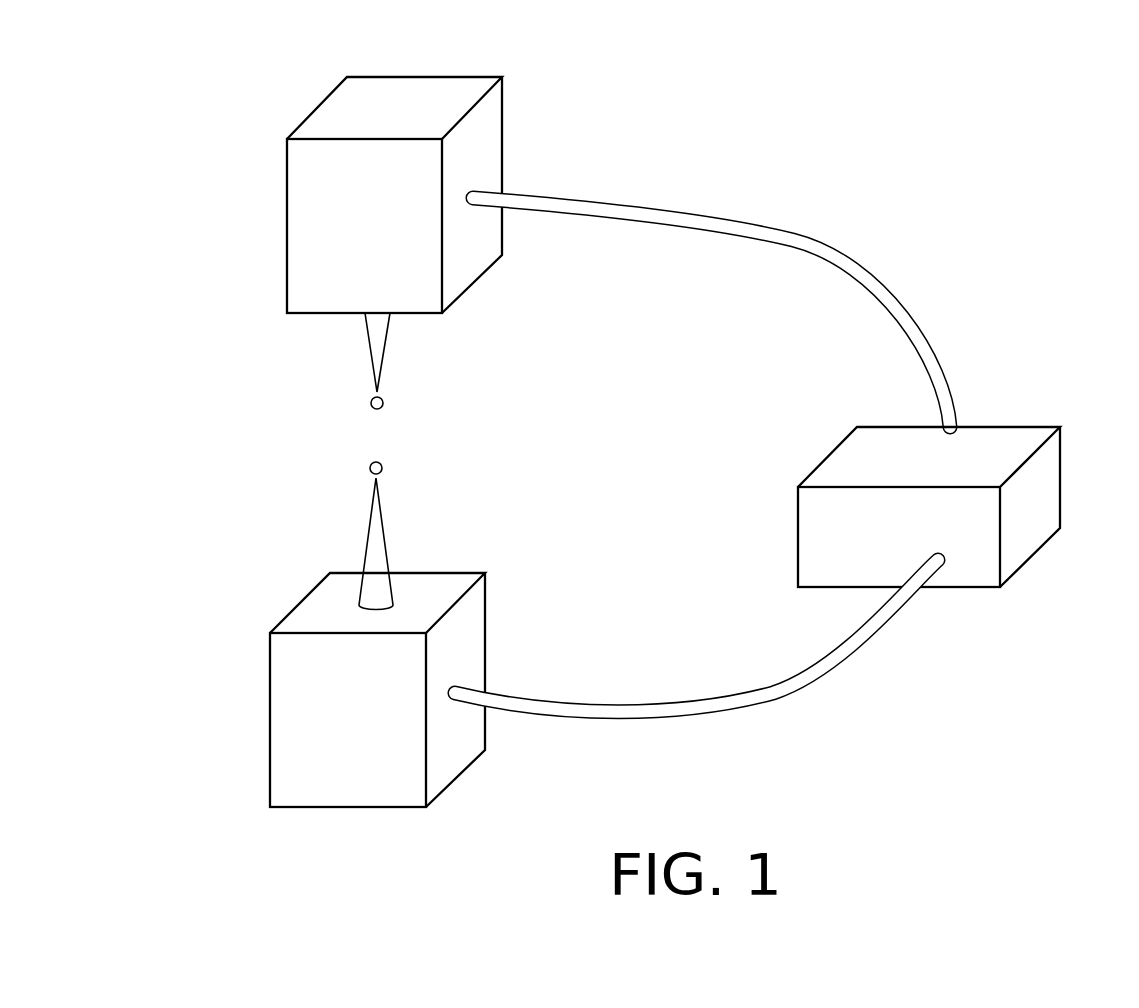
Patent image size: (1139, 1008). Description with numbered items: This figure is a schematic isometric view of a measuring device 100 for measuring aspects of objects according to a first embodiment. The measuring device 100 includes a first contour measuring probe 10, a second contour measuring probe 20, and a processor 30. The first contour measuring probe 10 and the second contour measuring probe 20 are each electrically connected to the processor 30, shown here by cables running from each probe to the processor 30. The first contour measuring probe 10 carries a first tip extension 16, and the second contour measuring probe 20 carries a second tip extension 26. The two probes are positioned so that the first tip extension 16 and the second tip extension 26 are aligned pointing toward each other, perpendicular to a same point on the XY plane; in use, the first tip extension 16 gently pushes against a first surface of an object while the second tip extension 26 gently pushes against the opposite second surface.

The measuring device 100 is at (975, 110).
The first contour measuring probe 10 is at (318, 233).
The first tip extension 16 is at (372, 344).
The second contour measuring probe 20 is at (305, 723).
The second tip extension 26 is at (375, 550).
The processor 30 is at (1023, 499).